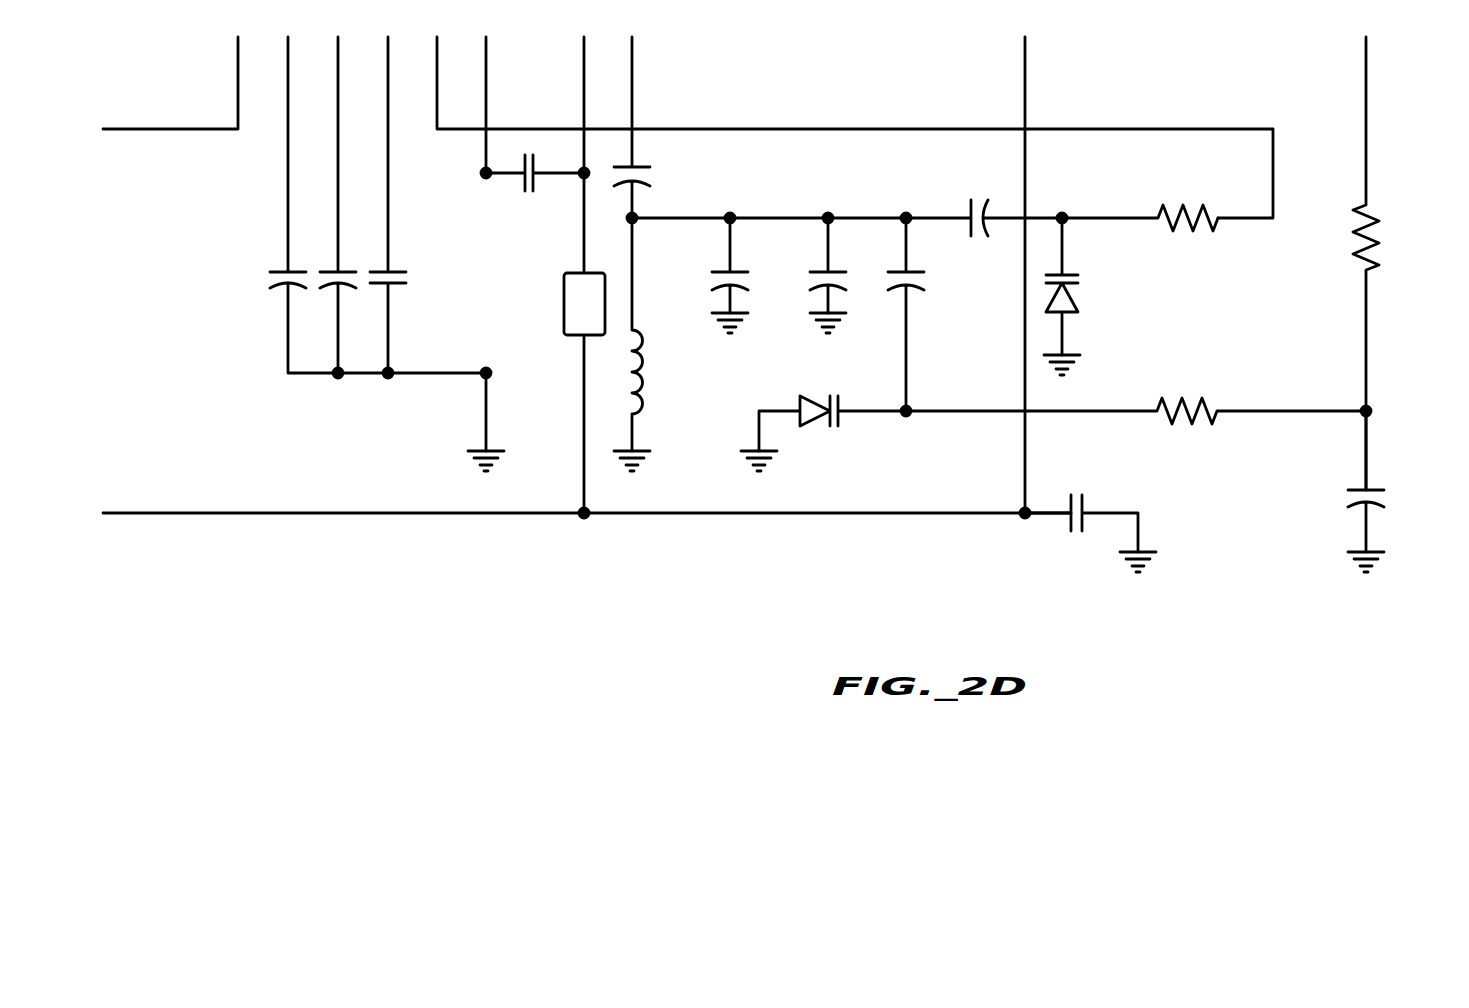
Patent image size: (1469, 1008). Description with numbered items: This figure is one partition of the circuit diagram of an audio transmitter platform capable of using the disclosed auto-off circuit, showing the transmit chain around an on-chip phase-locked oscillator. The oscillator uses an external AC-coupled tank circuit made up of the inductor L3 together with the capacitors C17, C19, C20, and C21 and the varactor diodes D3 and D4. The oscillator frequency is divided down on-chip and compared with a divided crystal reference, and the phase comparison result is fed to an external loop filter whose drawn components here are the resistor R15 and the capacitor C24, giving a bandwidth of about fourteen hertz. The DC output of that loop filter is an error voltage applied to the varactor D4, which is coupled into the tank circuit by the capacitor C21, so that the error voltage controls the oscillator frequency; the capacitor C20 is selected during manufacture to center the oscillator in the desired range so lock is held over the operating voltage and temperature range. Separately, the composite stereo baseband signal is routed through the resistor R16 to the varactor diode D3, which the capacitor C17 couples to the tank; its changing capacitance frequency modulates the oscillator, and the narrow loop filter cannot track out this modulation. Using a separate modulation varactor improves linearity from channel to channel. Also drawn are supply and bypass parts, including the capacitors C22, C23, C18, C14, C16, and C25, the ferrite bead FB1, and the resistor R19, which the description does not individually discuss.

The capacitor 2200pF C22 is at (241, 170).
The capacitor 150pF C23 is at (318, 235).
The capacitor 10uF C18 is at (421, 205).
The capacitor .01uF C14 is at (535, 199).
The ferrite bead FB1 is at (554, 304).
The capacitor 10pF C16 is at (669, 127).
The inductor L3 is at (677, 344).
The tank circuit capacitor C19 is at (696, 275).
The centering capacitor C20 is at (803, 275).
The coupling capacitor C21 is at (930, 314).
The coupling capacitor C17 is at (984, 223).
The varactor diode D3 is at (1121, 296).
The resistor R16 is at (1140, 191).
The loop filter resistor R15 is at (1395, 263).
The resistor 10K R19 is at (1136, 441).
The varactor diode D4 is at (827, 421).
The loop filter capacitor C24 is at (1408, 491).
The capacitor .1uF C25 is at (1090, 520).